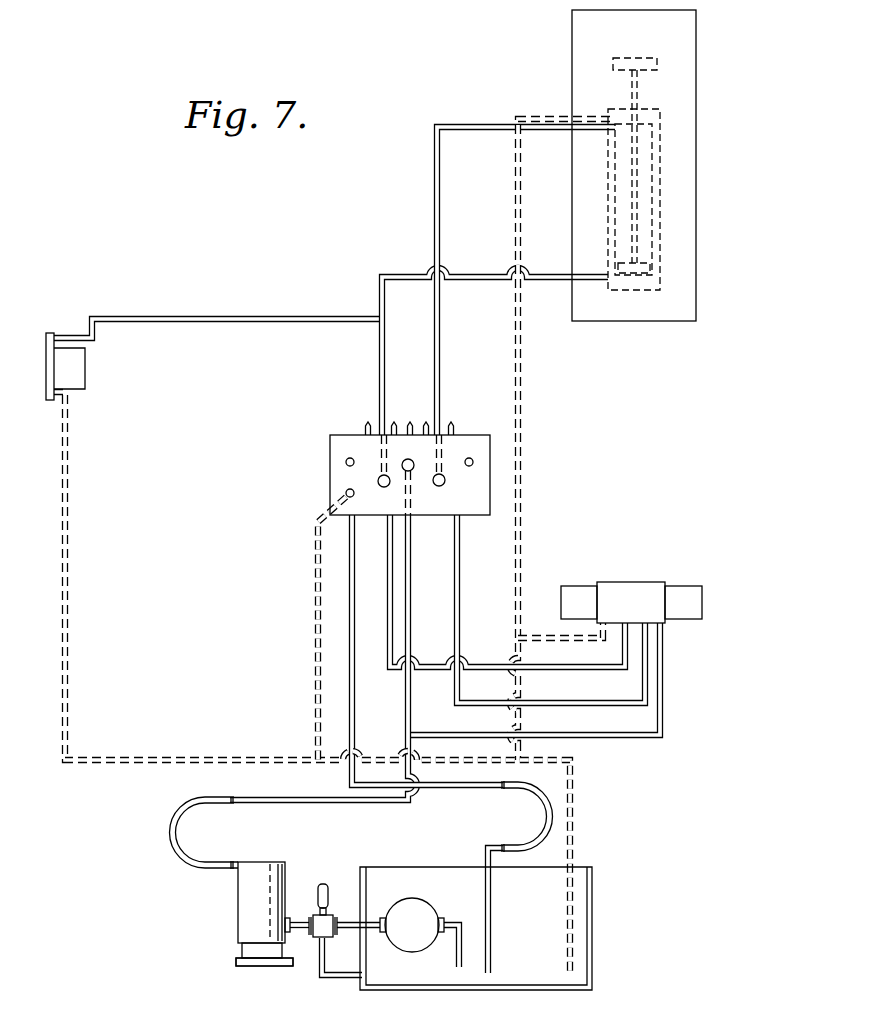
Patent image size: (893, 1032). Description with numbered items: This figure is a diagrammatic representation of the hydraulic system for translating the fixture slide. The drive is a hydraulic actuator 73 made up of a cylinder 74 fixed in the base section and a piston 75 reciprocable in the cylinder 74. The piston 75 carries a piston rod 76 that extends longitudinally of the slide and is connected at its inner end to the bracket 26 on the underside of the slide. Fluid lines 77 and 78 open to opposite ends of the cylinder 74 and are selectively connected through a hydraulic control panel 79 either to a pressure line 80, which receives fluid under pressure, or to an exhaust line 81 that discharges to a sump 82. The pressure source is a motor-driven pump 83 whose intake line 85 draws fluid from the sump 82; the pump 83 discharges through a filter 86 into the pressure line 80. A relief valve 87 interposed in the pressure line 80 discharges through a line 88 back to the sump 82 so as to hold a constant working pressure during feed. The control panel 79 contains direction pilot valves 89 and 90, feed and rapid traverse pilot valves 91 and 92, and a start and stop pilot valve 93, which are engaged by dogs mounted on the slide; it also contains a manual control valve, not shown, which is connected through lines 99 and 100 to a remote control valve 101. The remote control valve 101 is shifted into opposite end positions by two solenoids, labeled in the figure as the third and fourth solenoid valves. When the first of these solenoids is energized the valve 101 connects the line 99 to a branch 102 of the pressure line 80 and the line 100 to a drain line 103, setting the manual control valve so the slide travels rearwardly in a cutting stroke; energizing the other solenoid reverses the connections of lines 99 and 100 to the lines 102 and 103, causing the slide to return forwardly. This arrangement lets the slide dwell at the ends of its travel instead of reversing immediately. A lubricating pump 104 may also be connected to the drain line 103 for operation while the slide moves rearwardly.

The bracket 26 is at (657, 64).
The piston rod 76 is at (638, 88).
The cylinder 74 is at (660, 143).
The hydraulic actuator 73 is at (660, 203).
The piston 75 is at (655, 270).
The fluid line 77 is at (382, 348).
The fluid line 78 is at (442, 346).
The lubricating pump 104 is at (78, 373).
The direction pilot valve 89 is at (366, 423).
The feed and rapid traverse pilot valve 91 is at (392, 423).
The start and stop pilot valve 93 is at (410, 421).
The feed and rapid traverse pilot valve 92 is at (428, 416).
The direction pilot valve 90 is at (452, 421).
The hydraulic control panel 79 is at (482, 437).
The line 99 is at (388, 578).
The pressure line 80 is at (411, 578).
The line 100 is at (460, 579).
The drain line 103 is at (523, 575).
The remote control valve 101 is at (620, 583).
The branch of the pressure line 102 is at (662, 705).
The exhaust line 81 is at (356, 715).
The filter 86 is at (247, 908).
The relief valve 87 is at (322, 883).
The line 88 is at (322, 978).
The pump 83 is at (425, 890).
The intake line 85 is at (457, 957).
The sump 82 is at (592, 906).